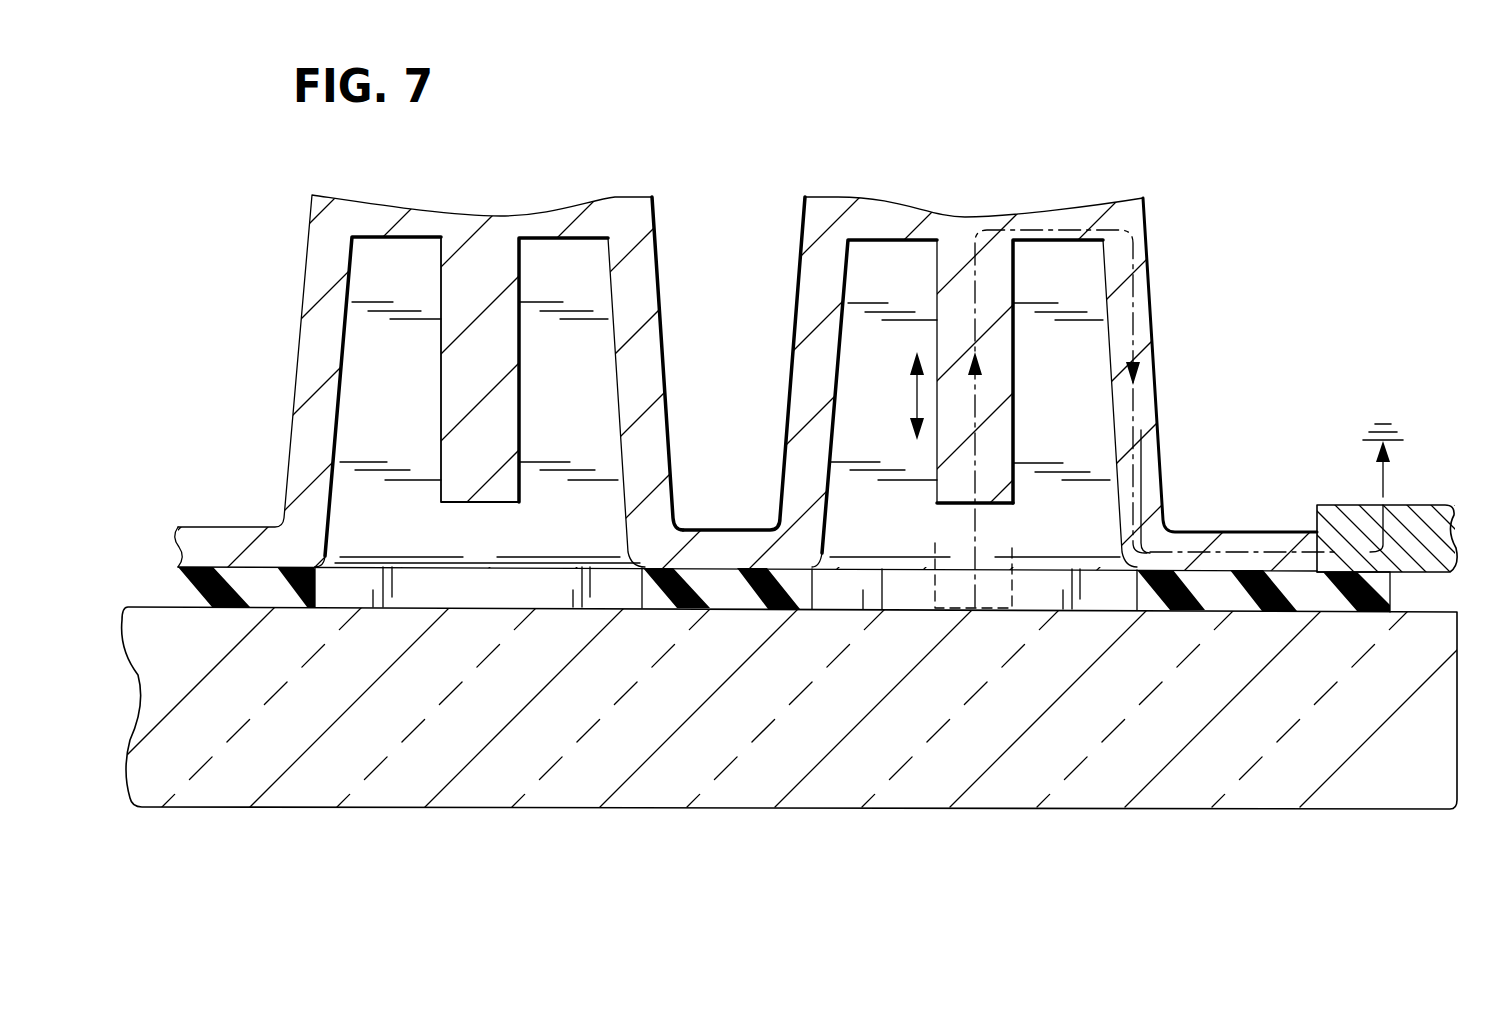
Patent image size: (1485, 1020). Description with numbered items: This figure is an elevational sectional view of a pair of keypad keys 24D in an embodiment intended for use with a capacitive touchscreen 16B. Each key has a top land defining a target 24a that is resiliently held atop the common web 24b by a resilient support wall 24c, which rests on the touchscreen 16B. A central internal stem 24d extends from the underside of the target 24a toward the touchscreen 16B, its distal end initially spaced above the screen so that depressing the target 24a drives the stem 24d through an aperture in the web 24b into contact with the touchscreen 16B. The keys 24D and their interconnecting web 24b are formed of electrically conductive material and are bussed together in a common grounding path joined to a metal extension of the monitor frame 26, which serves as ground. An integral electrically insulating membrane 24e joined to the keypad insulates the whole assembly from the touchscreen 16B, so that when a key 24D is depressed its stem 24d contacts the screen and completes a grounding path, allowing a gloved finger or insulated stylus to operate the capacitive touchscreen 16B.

The capacitive touchscreen 16B is at (740, 793).
The target 24a is at (890, 204).
The web 24b is at (740, 528).
The resilient support wall 24c is at (790, 373).
The central internal stem 24d is at (1015, 397).
The electrically insulating membrane 24e is at (1210, 588).
The keys 24D is at (805, 197).
The frame 26 is at (1338, 505).